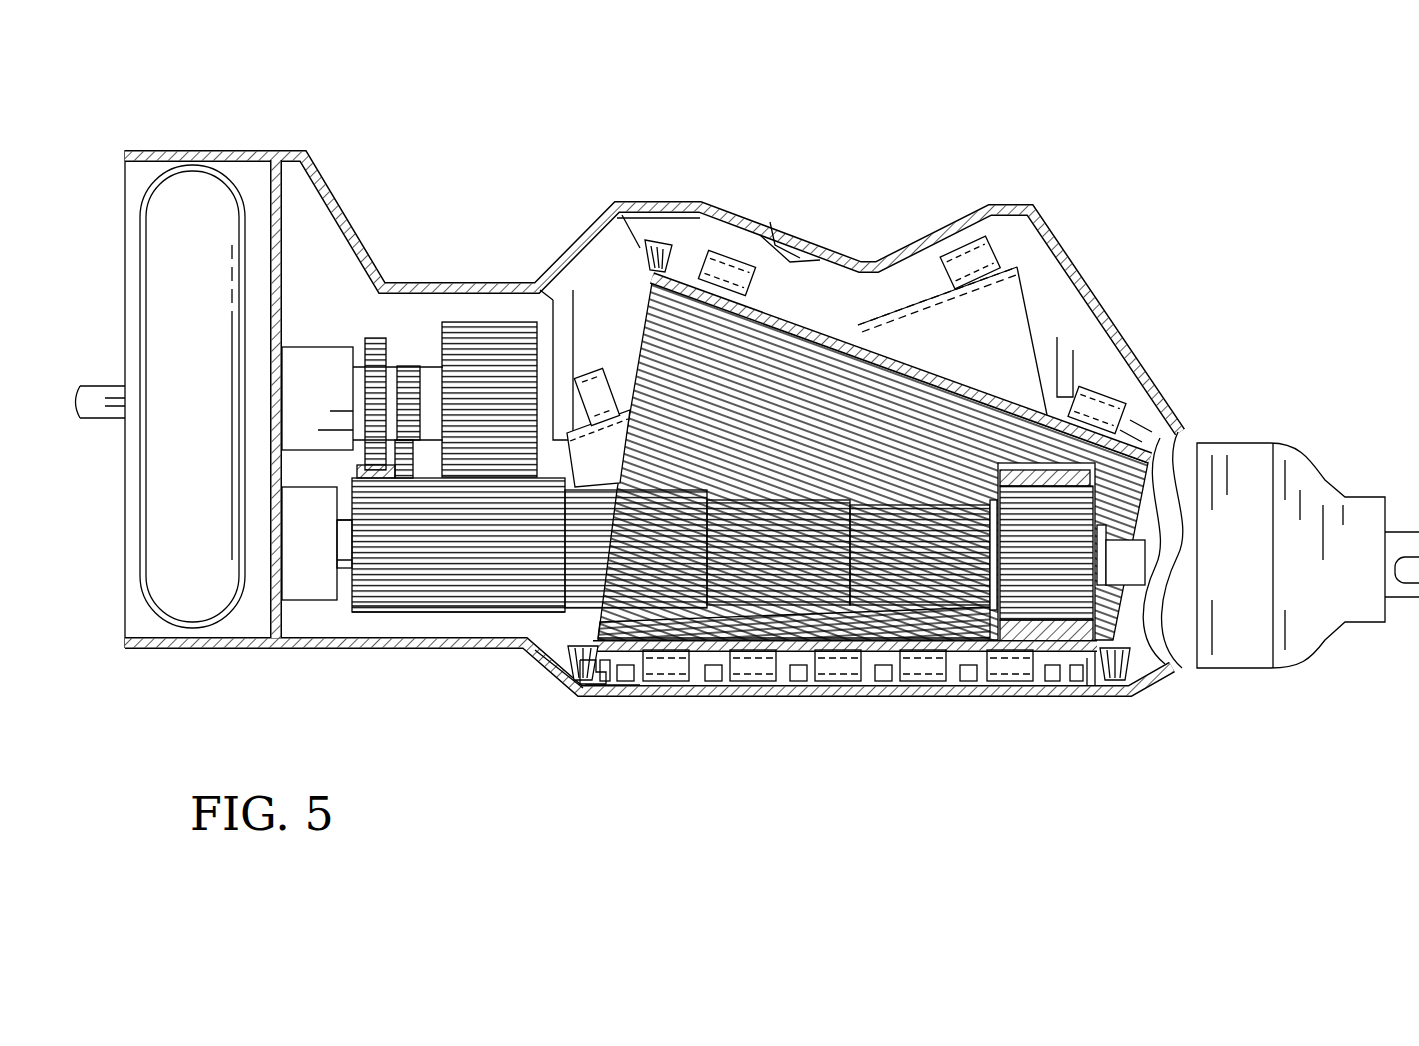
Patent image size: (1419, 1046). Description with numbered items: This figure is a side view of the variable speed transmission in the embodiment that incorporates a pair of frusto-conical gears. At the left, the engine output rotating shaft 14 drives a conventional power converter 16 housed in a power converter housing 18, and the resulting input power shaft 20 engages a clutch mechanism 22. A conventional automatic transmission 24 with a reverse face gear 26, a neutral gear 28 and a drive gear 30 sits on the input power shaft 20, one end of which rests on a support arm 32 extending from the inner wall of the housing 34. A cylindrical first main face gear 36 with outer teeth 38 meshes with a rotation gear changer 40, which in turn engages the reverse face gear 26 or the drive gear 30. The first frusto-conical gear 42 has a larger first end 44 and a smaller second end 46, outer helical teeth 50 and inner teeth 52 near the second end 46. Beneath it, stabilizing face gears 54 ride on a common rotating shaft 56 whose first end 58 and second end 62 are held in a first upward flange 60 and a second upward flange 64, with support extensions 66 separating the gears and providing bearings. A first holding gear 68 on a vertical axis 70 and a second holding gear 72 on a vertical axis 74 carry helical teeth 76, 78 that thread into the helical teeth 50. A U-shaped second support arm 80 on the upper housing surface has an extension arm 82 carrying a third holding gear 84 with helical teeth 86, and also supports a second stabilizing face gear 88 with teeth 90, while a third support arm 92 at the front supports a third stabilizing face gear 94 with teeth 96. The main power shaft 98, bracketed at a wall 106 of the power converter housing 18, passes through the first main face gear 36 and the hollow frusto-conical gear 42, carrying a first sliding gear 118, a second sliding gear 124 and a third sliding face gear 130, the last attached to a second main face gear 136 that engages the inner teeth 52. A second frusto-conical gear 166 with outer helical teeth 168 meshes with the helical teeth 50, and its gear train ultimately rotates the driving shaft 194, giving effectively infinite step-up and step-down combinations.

The engine output rotating shaft 14 is at (108, 400).
The power converter 16 is at (172, 585).
The power converter housing 18 is at (245, 645).
The input power shaft 20 is at (258, 380).
The clutch mechanism 22 is at (318, 347).
The automatic transmission 24 is at (397, 312).
The reverse face gear 26 is at (372, 338).
The neutral gear 28 is at (412, 362).
The drive gear 30 is at (470, 322).
The support arm 32 is at (548, 300).
The housing 34 is at (688, 245).
The first main face gear 36 is at (405, 600).
The teeth 38 is at (372, 615).
The rotation gear changer 40 is at (355, 465).
The first frusto-conical gear 42 is at (835, 312).
The first end 44 is at (482, 632).
The second end 46 is at (1147, 613).
The helical teeth 50 is at (880, 305).
The second plurality of teeth 52 is at (1000, 690).
The stabilizing face gears 54 is at (662, 684).
The common rotating shaft 56 is at (1060, 690).
The first end 58 is at (607, 684).
The first upward flange 60 is at (588, 694).
The second end 62 is at (1090, 692).
The second upward flange 64 is at (1115, 692).
The support extensions 66 is at (624, 684).
The first holding gear 68 is at (560, 665).
The vertical axis 70 is at (590, 665).
The second holding gear 72 is at (1160, 670).
The vertical axis 74 is at (1152, 682).
The helical teeth 76 is at (566, 650).
The helical teeth 78 is at (1128, 662).
The second support arm 80 is at (782, 256).
The extension arm 82 is at (648, 250).
The third holding gear 84 is at (642, 245).
The helical teeth 86 is at (600, 365).
The second stabilizing face gear 88 is at (730, 250).
The teeth 90 is at (762, 262).
The third support arm 92 is at (1080, 322).
The third stabilizing face gear 94 is at (1108, 398).
The teeth 96 is at (1135, 428).
The main power shaft 98 is at (1145, 555).
The wall 106 is at (270, 548).
The first sliding gear 118 is at (455, 614).
The second sliding gear 124 is at (745, 690).
The third sliding face gear 130 is at (953, 575).
The second main face gear 136 is at (1075, 510).
The second frusto-conical gear 166 is at (1045, 262).
The outer helical teeth 168 is at (930, 265).
The driving shaft 194 is at (1402, 540).